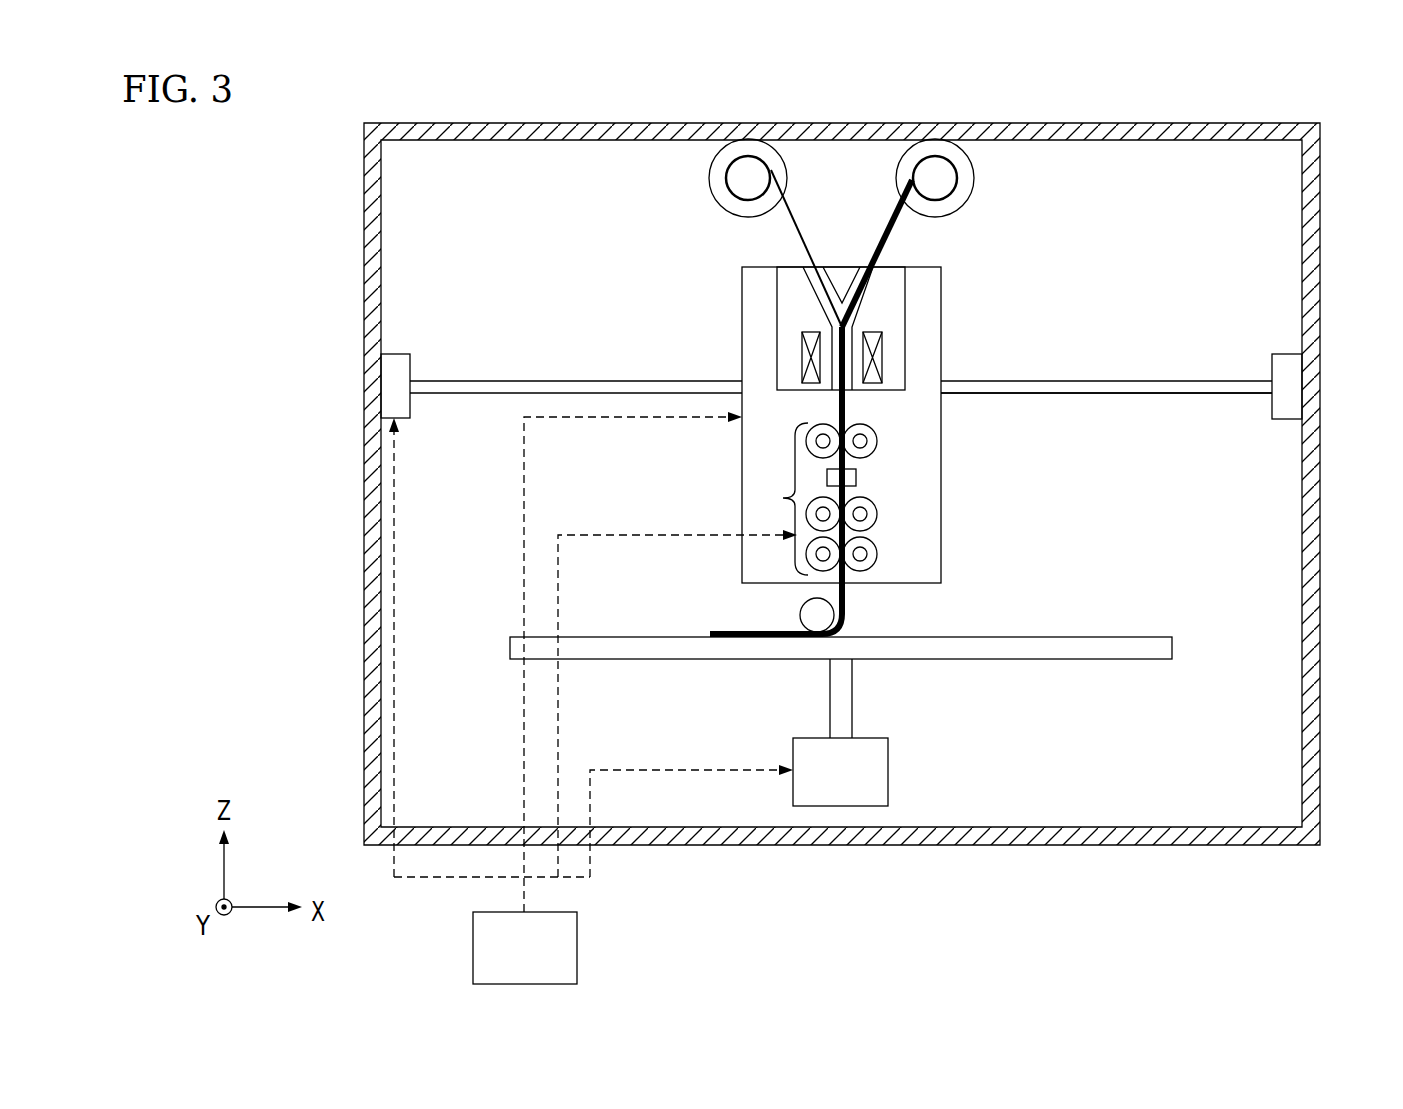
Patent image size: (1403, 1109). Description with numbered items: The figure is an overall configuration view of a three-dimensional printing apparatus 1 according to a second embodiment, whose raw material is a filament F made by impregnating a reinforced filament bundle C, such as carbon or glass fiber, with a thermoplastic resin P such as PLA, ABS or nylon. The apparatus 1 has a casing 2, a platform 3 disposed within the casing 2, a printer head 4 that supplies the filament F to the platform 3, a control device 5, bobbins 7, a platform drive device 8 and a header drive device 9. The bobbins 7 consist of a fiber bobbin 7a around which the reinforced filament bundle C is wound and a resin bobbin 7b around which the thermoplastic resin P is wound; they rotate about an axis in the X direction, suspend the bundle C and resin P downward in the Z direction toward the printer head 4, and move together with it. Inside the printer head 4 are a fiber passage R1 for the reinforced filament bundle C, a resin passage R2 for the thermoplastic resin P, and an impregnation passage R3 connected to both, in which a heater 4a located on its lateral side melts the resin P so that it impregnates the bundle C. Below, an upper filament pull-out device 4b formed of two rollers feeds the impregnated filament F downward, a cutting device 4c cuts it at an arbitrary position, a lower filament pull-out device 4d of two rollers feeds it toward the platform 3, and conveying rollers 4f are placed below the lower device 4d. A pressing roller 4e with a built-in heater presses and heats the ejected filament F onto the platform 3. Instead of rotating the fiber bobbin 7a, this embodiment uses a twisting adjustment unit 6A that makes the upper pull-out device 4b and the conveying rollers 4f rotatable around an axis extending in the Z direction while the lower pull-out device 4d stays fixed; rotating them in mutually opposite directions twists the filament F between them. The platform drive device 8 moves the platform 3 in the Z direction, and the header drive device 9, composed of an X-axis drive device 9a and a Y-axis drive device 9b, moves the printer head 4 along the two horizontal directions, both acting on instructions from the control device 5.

The three-dimensional printing apparatus 1 is at (808, 456).
The casing 2 is at (367, 198).
The platform 3 is at (1094, 637).
The printer head 4 is at (941, 315).
The heater 4a is at (815, 383).
The upper filament pull-out device 4b is at (878, 441).
The cutting device 4c is at (856, 477).
The lower filament pull-out device 4d is at (878, 514).
The pressing roller 4e is at (800, 614).
The conveying rollers 4f is at (878, 554).
The control device 5 is at (577, 950).
The twisting adjustment unit 6A is at (783, 498).
The bobbins 7 is at (856, 145).
The fiber bobbin 7a is at (779, 140).
The resin bobbin 7b is at (960, 140).
The platform drive device 8 is at (888, 770).
The header drive device 9 is at (841, 345).
The X-axis drive device 9a is at (1207, 393).
The Y-axis drive device 9b is at (398, 353).
The reinforced filament bundle C is at (797, 220).
The thermoplastic resin P is at (890, 234).
The fiber passage R1 is at (805, 278).
The resin passage R2 is at (868, 290).
The impregnation passage R3 is at (850, 358).
The filament F is at (822, 413).